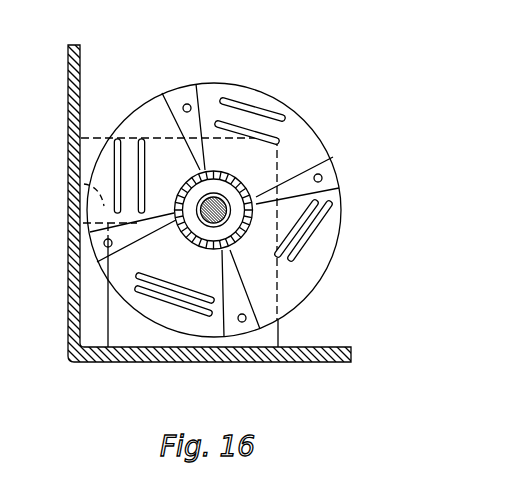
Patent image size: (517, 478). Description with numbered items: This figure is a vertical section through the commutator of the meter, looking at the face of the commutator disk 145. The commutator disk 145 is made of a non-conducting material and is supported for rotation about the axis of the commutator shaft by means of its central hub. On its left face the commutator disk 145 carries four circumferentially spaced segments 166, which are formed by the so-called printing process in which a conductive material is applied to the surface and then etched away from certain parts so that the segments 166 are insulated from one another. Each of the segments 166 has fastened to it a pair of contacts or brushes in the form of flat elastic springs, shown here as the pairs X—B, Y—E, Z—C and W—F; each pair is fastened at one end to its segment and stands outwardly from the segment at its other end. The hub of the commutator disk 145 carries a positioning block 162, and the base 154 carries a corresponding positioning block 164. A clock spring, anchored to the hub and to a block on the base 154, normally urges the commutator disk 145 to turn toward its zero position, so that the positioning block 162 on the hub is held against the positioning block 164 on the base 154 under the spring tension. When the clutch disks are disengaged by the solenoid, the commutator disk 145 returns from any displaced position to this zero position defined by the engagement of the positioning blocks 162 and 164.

The positioning block 164 is at (68, 302).
The positioning block 162 is at (84, 184).
The commutator disk 145 is at (253, 98).
The segments 166 is at (153, 115).
The base 154 is at (232, 246).
The contacts or brushes WF is at (140, 137).
The contacts or brushes XB is at (272, 141).
The contacts or brushes YE is at (163, 298).
The contacts or brushes ZC is at (300, 233).